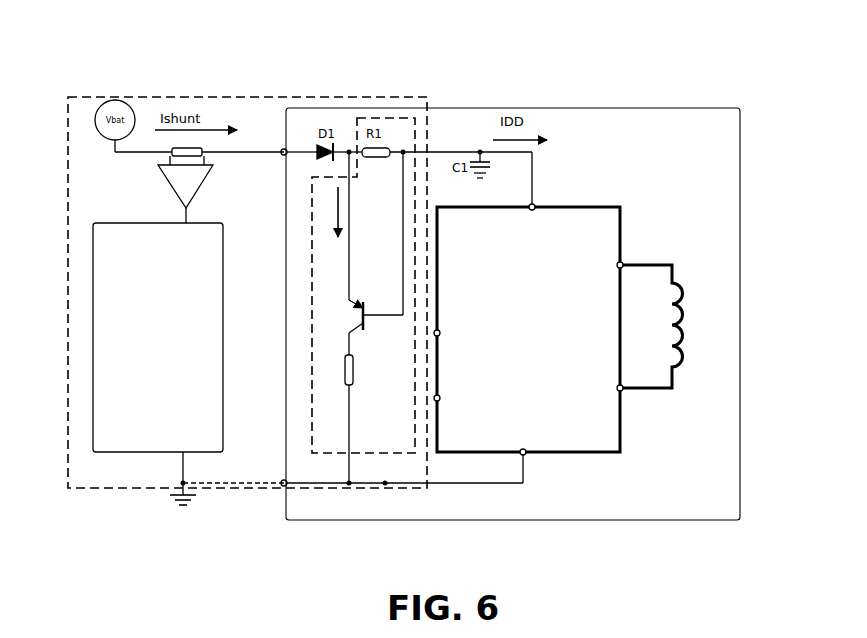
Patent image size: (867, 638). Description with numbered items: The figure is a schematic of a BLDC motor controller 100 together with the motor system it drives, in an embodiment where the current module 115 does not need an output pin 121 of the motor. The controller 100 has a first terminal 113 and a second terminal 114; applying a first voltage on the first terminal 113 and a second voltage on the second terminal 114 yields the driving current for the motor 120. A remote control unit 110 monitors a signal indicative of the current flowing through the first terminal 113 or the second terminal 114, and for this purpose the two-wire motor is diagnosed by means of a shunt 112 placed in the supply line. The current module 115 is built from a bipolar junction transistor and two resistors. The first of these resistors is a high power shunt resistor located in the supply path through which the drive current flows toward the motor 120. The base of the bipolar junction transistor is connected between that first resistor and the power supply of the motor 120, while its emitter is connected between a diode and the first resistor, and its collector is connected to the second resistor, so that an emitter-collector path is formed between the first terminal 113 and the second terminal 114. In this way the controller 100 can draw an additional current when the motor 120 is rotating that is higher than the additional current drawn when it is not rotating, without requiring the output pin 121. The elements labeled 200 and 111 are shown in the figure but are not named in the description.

The BLDC motor controller 100 is at (68, 380).
The remote power/control module 200 is at (132, 68).
The remote control unit 110 is at (188, 364).
The amplifier 111 is at (167, 182).
The shunt 112 is at (172, 153).
The first terminal 113 is at (282, 150).
The second terminal 114 is at (282, 486).
The current module 115 is at (312, 272).
The motor 120 is at (620, 243).
The output pin 121 is at (440, 336).